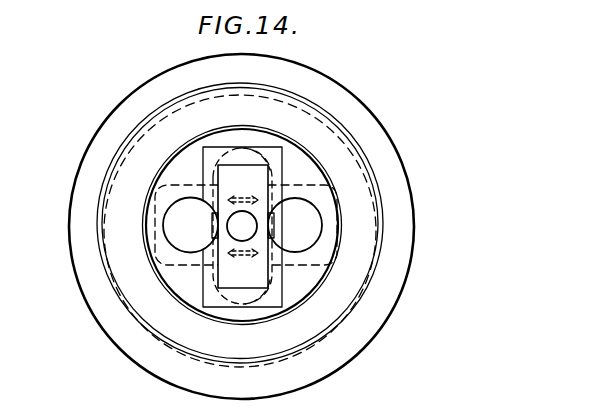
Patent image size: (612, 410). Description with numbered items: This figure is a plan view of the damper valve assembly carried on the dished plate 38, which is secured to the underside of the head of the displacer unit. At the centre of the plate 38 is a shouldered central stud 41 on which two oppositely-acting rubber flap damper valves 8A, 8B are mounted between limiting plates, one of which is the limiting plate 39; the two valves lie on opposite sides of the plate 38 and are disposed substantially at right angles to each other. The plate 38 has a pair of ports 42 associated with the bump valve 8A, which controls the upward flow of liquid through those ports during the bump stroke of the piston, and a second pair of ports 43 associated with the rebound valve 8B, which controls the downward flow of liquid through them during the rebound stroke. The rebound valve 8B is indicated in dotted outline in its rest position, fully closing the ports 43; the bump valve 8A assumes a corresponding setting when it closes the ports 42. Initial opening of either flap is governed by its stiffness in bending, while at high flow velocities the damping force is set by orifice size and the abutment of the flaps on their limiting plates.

The dished plate 38 is at (375, 117).
The limiting plate 39 is at (253, 177).
The shouldered central stud 41 is at (238, 228).
The ports 42 is at (235, 150).
The ports 43 is at (176, 222).
The bump valve 8A is at (265, 150).
The rebound valve 8B is at (292, 262).